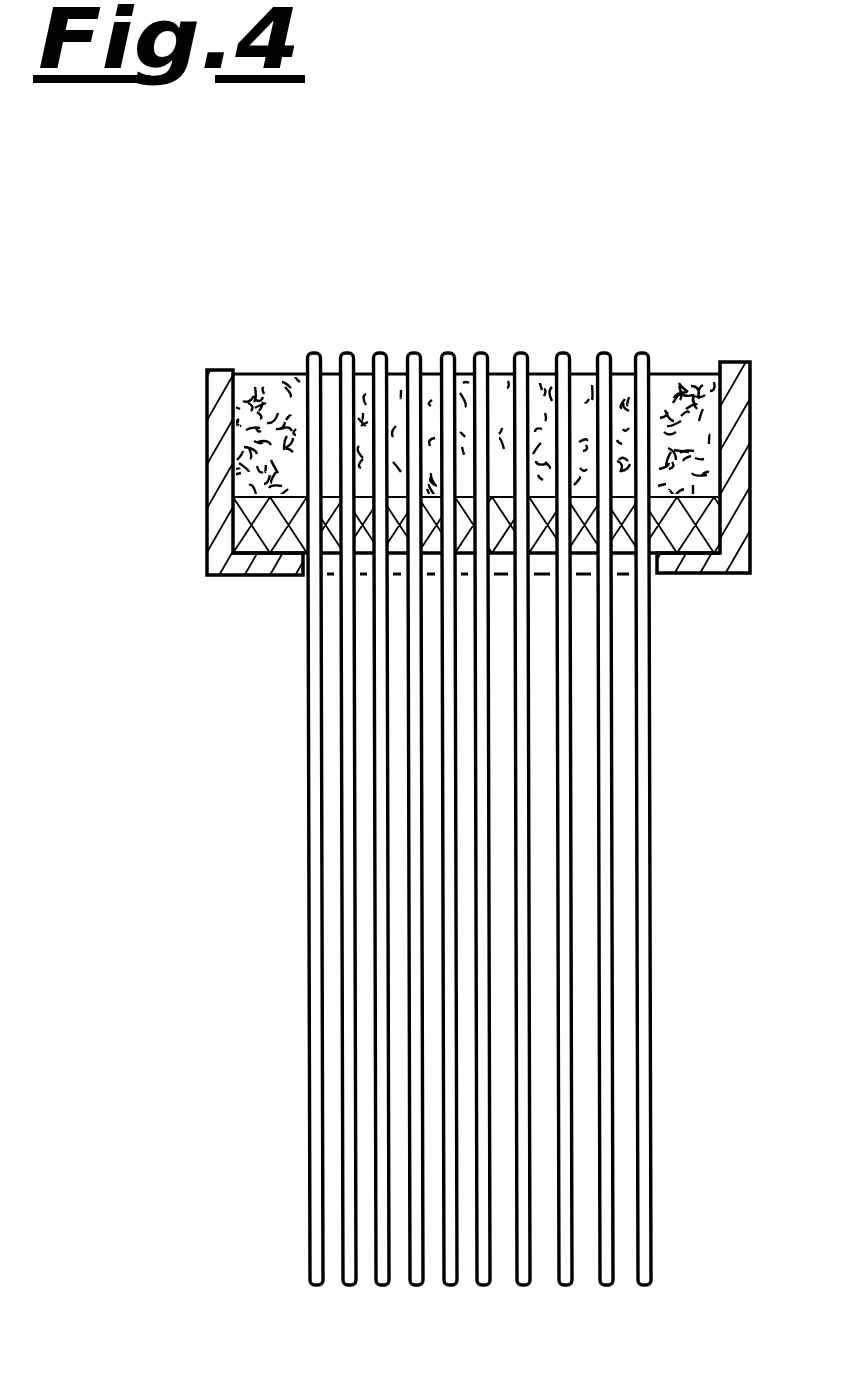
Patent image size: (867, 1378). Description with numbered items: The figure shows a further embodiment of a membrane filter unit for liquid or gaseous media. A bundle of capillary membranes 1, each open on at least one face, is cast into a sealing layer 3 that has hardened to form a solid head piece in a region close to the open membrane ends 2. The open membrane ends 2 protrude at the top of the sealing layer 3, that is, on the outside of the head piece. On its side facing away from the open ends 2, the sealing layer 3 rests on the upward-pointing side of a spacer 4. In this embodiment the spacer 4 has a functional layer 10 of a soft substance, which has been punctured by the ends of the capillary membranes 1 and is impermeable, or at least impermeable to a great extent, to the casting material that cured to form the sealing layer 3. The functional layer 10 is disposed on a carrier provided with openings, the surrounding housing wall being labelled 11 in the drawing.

The capillary membranes 1 is at (383, 1173).
The open membrane end 2 is at (596, 345).
The sealing layer 3 is at (263, 393).
The spacer 4 is at (261, 590).
The functional layer 10 is at (233, 543).
The housing wall 11 is at (218, 472).